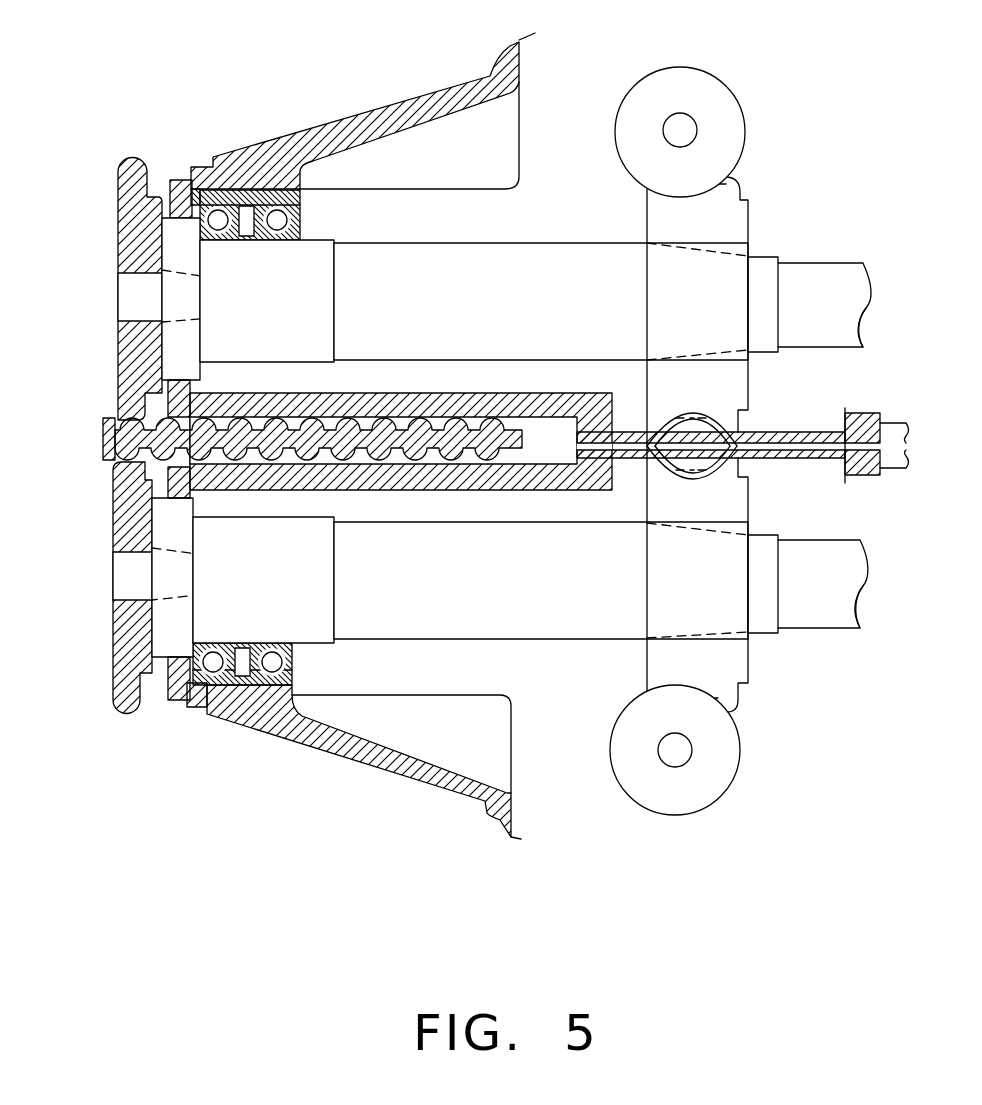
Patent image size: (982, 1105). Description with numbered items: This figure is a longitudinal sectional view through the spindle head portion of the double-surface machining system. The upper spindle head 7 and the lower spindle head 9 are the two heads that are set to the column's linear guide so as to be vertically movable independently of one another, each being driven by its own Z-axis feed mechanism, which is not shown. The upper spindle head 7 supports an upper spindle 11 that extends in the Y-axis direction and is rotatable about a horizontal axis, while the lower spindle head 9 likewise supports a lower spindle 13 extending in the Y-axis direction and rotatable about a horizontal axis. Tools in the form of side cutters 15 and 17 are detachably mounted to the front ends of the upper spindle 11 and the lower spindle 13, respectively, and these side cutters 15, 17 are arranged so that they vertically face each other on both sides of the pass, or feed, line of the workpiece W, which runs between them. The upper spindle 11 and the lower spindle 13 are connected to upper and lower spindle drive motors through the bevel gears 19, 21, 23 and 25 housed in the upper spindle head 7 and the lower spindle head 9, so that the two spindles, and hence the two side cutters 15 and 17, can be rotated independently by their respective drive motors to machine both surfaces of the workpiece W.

The upper spindle head 7 is at (385, 108).
The lower spindle head 9 is at (380, 760).
The upper spindle 11 is at (545, 262).
The lower spindle 13 is at (570, 630).
The side cutter 15 is at (130, 233).
The side cutter 17 is at (113, 633).
The bevel gear 19 is at (740, 225).
The bevel gear 21 is at (700, 83).
The bevel gear 23 is at (730, 500).
The bevel gear 25 is at (718, 785).
The workpiece W is at (391, 423).